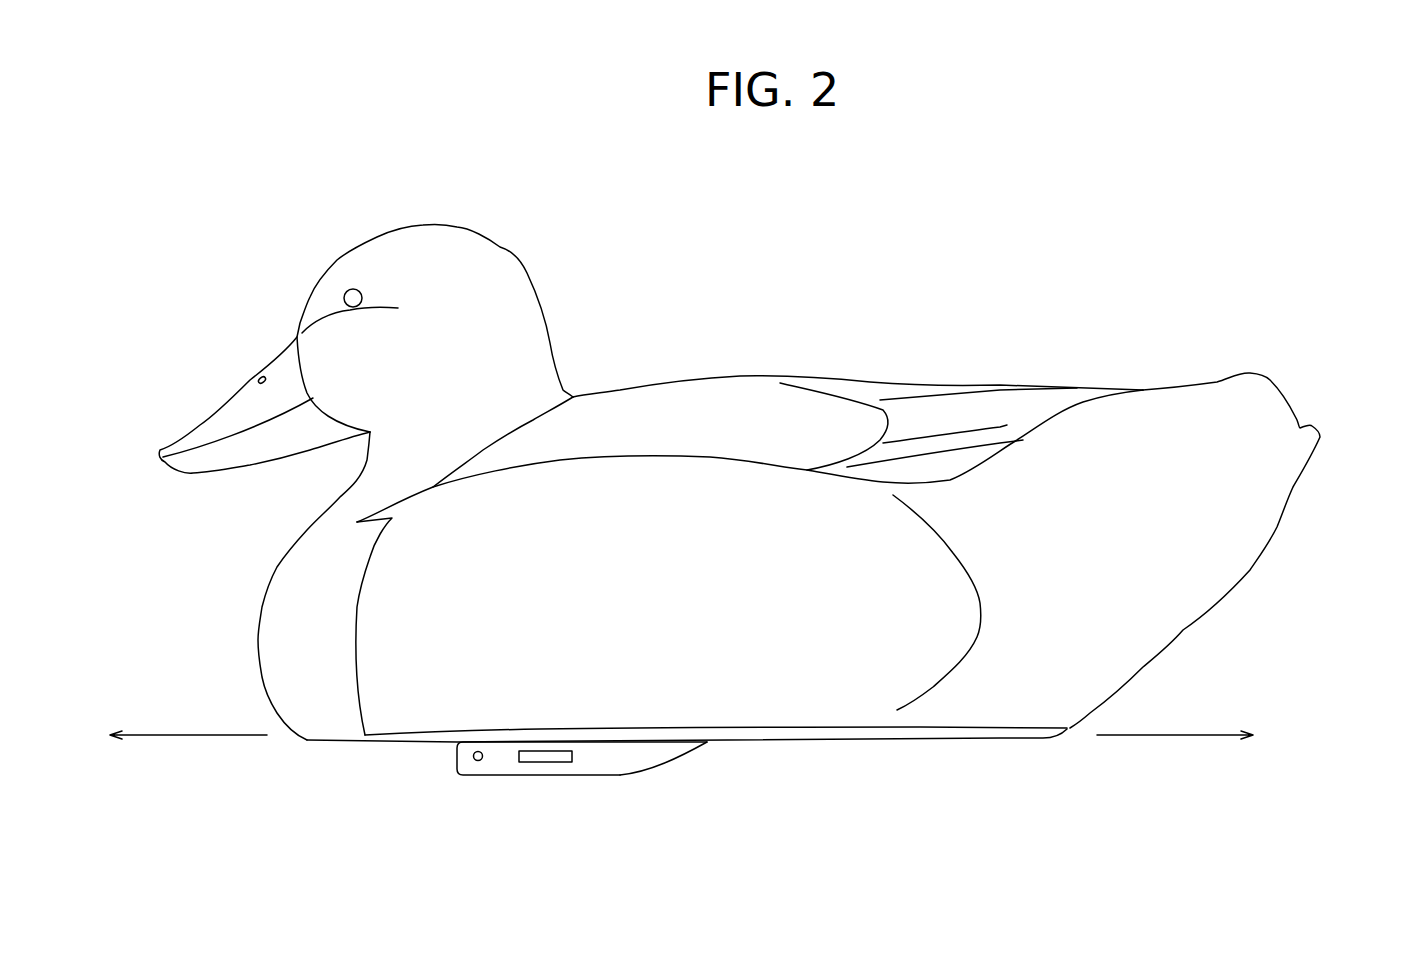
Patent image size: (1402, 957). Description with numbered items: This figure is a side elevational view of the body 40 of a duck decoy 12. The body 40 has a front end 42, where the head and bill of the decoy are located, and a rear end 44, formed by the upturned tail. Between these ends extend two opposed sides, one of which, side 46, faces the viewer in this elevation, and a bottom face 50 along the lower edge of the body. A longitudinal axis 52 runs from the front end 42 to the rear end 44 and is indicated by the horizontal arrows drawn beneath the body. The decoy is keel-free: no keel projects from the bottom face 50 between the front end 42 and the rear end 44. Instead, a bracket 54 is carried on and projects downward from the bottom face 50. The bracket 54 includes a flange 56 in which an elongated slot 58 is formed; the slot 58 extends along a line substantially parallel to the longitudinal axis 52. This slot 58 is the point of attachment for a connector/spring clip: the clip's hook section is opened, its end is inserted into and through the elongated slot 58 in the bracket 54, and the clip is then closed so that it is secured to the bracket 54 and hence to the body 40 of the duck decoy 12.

The duck decoy 12 is at (910, 227).
The body 40 is at (870, 382).
The front end 42 is at (258, 660).
The rear end 44 is at (1277, 527).
The side 46 is at (780, 653).
The bottom face 50 is at (928, 742).
The longitudinal axis 52 is at (180, 735).
The bracket 54 is at (471, 793).
The flange 56 is at (620, 762).
The elongated slot 58 is at (547, 762).